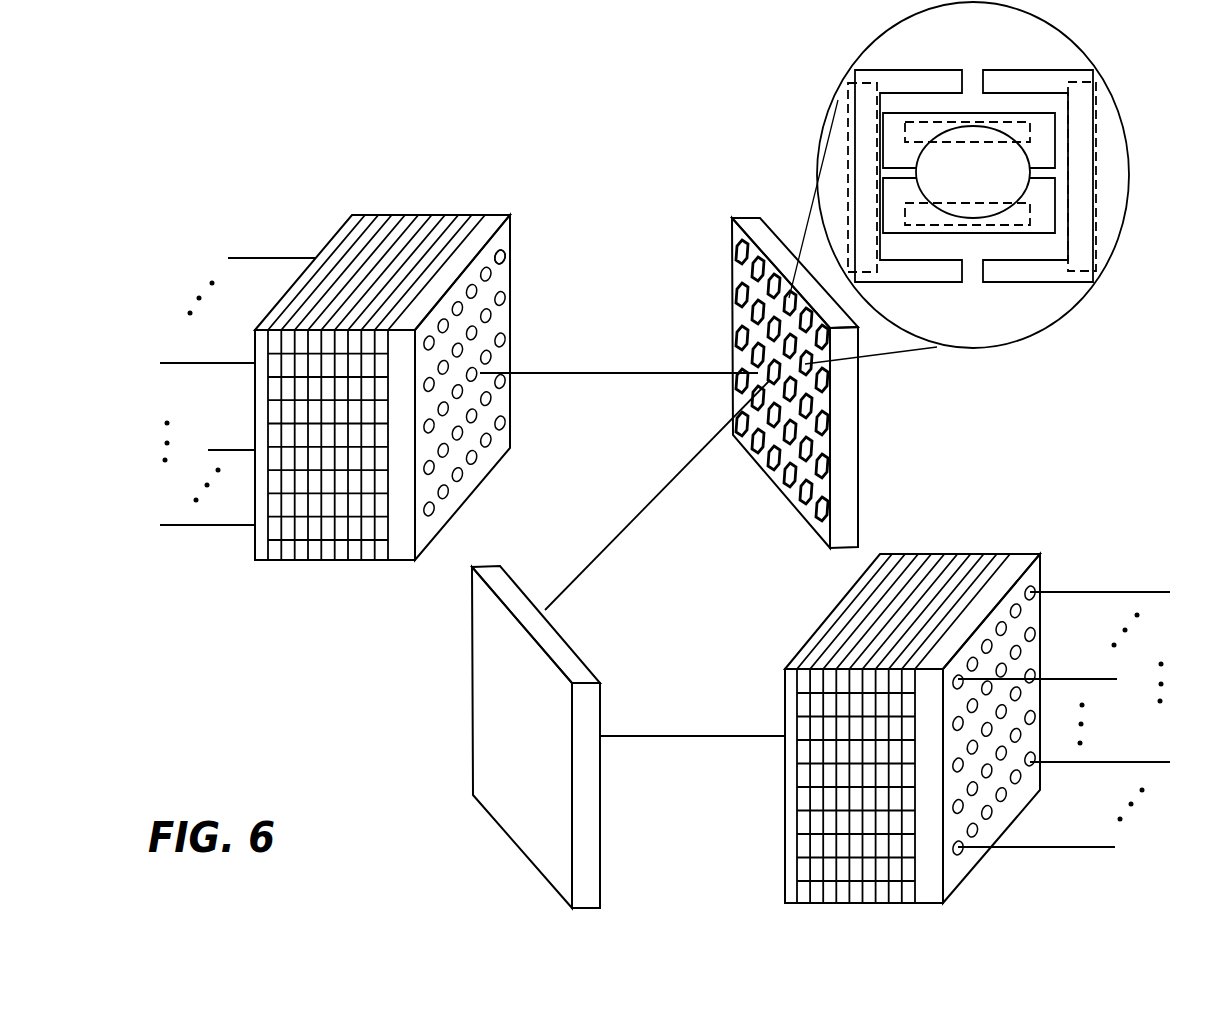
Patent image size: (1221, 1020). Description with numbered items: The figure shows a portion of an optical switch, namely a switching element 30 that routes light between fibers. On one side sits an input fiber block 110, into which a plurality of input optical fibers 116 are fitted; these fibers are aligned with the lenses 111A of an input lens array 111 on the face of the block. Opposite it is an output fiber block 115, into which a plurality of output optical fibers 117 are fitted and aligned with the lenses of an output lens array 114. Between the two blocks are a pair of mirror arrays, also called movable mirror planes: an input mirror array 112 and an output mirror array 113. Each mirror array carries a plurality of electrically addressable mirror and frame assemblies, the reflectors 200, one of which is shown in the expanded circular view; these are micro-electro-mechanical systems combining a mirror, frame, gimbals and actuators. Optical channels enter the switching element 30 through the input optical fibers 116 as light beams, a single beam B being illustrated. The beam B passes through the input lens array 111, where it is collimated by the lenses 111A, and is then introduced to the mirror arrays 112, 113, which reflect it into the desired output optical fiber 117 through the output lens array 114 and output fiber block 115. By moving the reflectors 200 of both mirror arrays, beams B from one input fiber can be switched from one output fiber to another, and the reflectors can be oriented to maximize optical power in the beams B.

The switching element 30 is at (1100, 869).
The input fiber block 110 is at (428, 215).
The input lens array 111 is at (509, 215).
The lens 111A is at (505, 257).
The input mirror array 112 is at (745, 217).
The output mirror array 113 is at (588, 667).
The output lens array 114 is at (882, 554).
The output fiber block 115 is at (983, 554).
The input optical fibers 116 is at (280, 258).
The output optical fibers 117 is at (1108, 592).
The reflector 200 is at (742, 247).
The light beam B is at (632, 373).